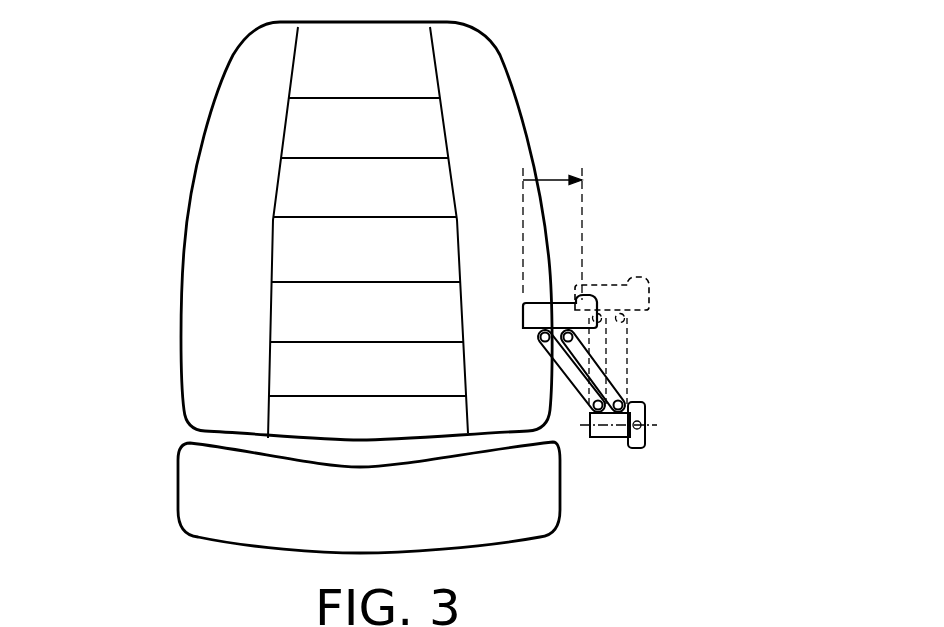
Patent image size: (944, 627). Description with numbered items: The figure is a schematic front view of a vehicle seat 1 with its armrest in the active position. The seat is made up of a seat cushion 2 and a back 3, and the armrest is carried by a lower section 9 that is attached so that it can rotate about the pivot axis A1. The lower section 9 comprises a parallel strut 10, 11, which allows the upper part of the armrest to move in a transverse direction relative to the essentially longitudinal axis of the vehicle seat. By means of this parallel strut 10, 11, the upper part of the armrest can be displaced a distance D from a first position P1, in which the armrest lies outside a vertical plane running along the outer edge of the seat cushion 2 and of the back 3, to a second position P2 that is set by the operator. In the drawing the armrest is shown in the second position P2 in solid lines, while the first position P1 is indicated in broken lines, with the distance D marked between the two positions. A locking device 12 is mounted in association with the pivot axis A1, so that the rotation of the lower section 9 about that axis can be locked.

The vehicle seat 1 is at (310, 287).
The seat cushion 2 is at (193, 483).
The back 3 is at (205, 218).
The lower section 9 is at (633, 372).
The parallel strut 10 is at (578, 362).
The parallel strut 11 is at (648, 305).
The locking device 12 is at (652, 417).
The pivot axis A1 is at (652, 428).
The first position P1 is at (676, 281).
The second position P2 is at (602, 242).
The distance D is at (552, 227).